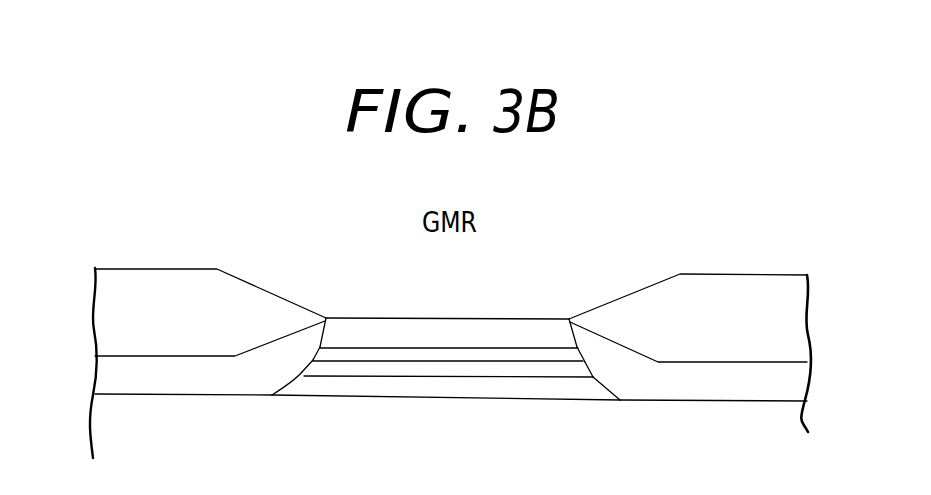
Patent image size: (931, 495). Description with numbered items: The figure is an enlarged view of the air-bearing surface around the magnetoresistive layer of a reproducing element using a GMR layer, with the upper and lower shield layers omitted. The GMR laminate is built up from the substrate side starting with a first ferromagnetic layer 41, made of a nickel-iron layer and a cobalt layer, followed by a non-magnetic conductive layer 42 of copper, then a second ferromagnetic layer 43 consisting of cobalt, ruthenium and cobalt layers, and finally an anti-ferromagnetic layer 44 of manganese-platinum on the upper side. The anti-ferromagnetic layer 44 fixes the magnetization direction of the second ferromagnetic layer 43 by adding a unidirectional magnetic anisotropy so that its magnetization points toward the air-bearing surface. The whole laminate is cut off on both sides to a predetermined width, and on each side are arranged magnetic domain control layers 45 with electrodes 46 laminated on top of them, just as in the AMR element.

The first ferromagnetic layer 41 is at (554, 390).
The non-magnetic conductive layer 42 is at (490, 370).
The second ferromagnetic layer 43 is at (428, 355).
The anti-ferromagnetic layer 44 is at (362, 335).
The magnetic domain control layers 45 is at (163, 385).
The electrodes 46 is at (172, 278).